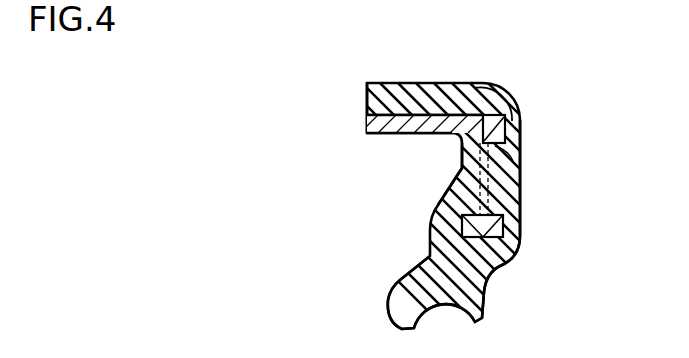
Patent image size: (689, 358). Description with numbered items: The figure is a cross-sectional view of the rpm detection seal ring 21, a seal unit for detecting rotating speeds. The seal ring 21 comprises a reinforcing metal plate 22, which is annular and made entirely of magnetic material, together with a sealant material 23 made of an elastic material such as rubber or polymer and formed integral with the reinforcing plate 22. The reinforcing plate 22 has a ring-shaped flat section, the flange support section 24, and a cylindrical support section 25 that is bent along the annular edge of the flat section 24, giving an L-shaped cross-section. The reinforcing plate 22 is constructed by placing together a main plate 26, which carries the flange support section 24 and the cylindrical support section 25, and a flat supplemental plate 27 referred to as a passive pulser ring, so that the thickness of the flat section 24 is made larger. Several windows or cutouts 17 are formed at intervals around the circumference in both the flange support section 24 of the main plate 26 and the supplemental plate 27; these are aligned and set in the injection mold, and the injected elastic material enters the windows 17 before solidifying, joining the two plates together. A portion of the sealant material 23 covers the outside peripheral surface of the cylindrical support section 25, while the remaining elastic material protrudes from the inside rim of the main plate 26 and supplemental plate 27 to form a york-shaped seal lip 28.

The seal ring 21 is at (522, 104).
The reinforcing metal plate 22 is at (366, 133).
The cylindrical support section 25 is at (432, 115).
The main plate 26 is at (397, 133).
The supplemental plate 27 is at (506, 131).
The windows 17 is at (519, 168).
The flange support section 24 is at (457, 166).
The sealant material 23 is at (484, 276).
The seal lip 28 is at (398, 303).